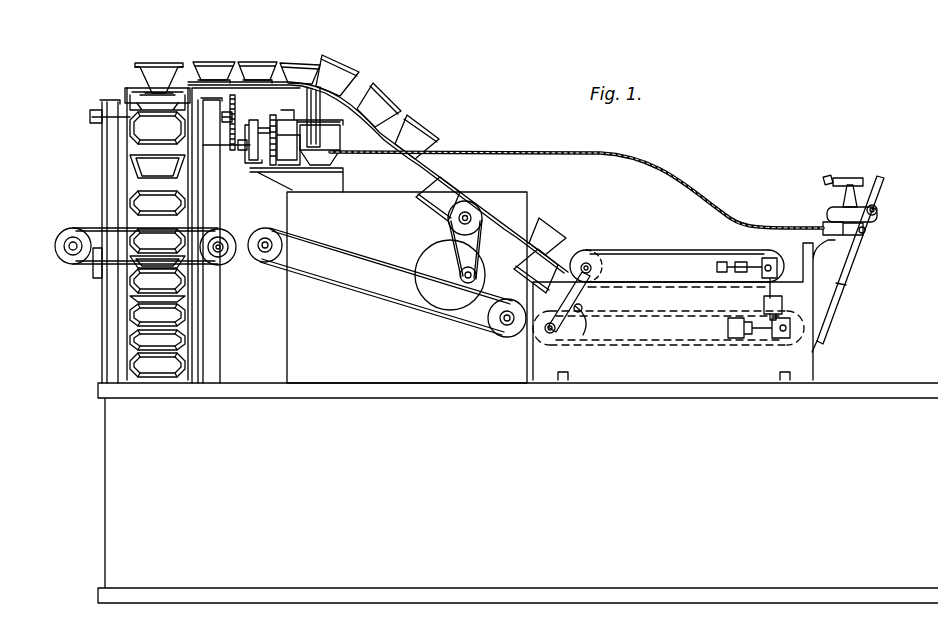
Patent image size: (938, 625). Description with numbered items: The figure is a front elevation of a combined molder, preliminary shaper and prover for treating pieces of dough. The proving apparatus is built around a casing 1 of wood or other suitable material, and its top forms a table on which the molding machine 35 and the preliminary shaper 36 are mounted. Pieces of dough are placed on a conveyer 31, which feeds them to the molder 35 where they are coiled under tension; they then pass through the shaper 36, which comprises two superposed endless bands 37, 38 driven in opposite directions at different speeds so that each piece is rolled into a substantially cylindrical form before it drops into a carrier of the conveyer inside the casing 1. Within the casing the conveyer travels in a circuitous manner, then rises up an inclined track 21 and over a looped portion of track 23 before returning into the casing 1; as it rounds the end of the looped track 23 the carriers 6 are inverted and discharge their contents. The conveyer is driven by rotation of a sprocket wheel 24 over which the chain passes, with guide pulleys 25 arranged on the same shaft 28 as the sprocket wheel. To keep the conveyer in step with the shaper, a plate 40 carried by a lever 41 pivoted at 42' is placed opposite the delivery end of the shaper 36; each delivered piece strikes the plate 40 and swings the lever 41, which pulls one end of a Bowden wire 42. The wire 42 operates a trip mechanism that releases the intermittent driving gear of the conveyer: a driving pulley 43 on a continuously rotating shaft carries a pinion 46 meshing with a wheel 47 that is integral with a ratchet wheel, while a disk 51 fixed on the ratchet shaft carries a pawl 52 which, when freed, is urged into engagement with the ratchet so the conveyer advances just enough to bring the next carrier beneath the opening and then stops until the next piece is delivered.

The casing 1 is at (518, 493).
The carriers 6 is at (140, 163).
The inclined track 21 is at (433, 157).
The looped portion of track 23 is at (130, 92).
The sprocket wheel 24 is at (147, 93).
The guide pulleys 25 is at (168, 95).
The shaft 28 is at (90, 117).
The conveyer 31 is at (57, 258).
The molding machine 35 is at (387, 287).
The preliminary shaper 36 is at (642, 284).
The endless band 37 is at (702, 250).
The endless band 38 is at (668, 328).
The plate 40 is at (838, 312).
The lever 41 is at (854, 262).
The Bowden wire 42 is at (620, 183).
The pivot 42' is at (893, 208).
The driving pulley 43 is at (317, 83).
The pinion 46 is at (273, 140).
The wheel 47 is at (268, 172).
The disk 51 is at (250, 127).
The pawl 52 is at (255, 130).